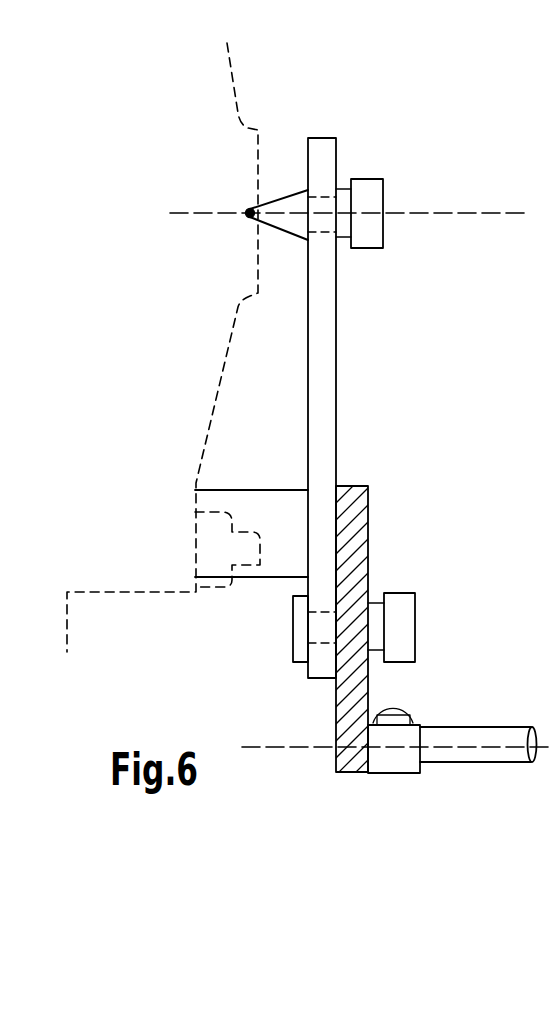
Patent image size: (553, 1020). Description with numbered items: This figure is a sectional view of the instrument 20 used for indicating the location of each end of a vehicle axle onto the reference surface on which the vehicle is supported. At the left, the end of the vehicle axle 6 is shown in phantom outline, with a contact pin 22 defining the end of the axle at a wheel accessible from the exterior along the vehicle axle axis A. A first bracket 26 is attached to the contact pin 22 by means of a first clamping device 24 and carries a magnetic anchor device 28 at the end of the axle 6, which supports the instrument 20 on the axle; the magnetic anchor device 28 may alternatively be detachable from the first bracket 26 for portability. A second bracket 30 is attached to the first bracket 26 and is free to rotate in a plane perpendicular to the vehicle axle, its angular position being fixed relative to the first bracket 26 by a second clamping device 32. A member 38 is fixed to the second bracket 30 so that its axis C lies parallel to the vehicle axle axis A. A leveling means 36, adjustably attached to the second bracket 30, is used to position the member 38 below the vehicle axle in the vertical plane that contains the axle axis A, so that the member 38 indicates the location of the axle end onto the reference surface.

The vehicle axle 6 is at (201, 394).
The instrument 20 is at (362, 373).
The contact pin 22 is at (285, 195).
The first clamping device 24 is at (378, 190).
The first bracket 26 is at (330, 293).
The magnetic anchor device 28 is at (270, 500).
The second bracket 30 is at (363, 542).
The second clamping device 32 is at (410, 630).
The leveling means 36 is at (402, 705).
The member 38 is at (468, 755).
The vehicle axle axis A is at (443, 213).
The member axis C is at (300, 745).